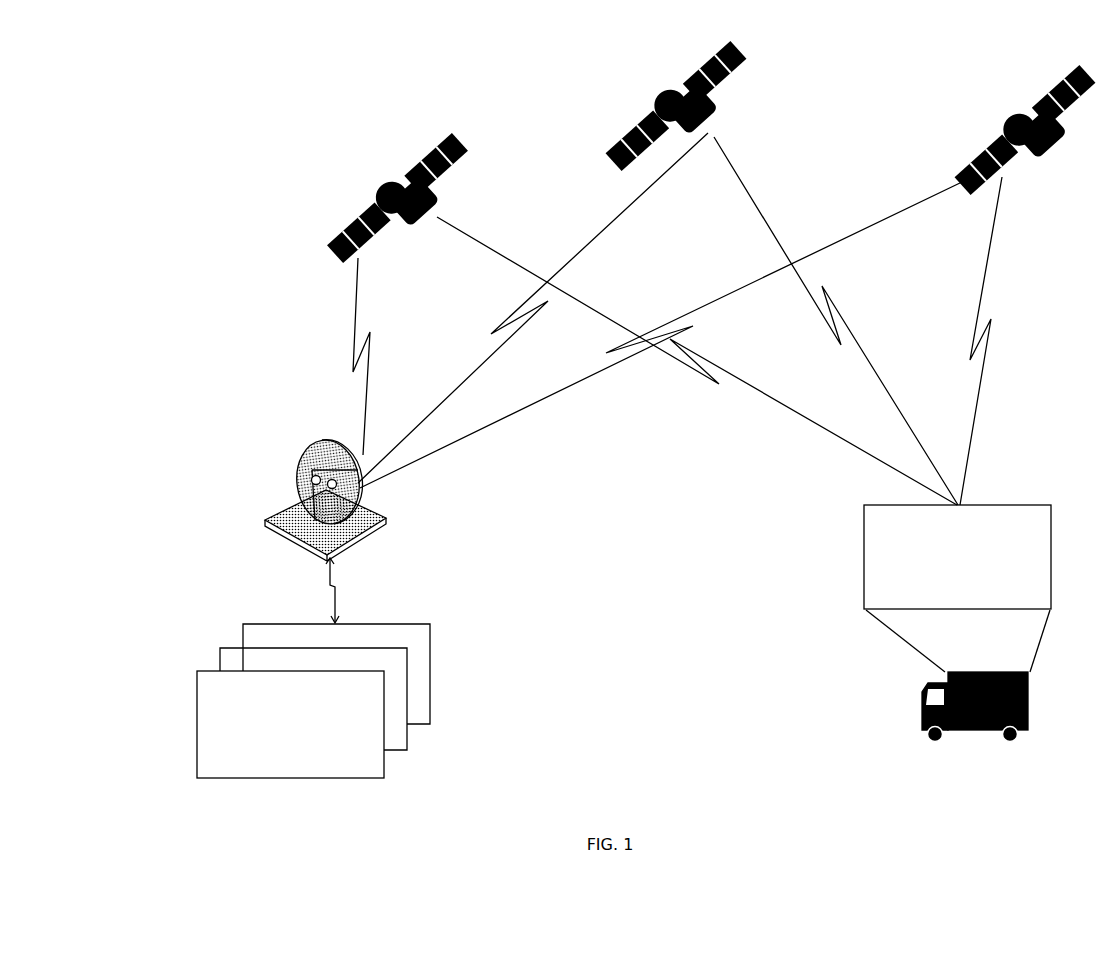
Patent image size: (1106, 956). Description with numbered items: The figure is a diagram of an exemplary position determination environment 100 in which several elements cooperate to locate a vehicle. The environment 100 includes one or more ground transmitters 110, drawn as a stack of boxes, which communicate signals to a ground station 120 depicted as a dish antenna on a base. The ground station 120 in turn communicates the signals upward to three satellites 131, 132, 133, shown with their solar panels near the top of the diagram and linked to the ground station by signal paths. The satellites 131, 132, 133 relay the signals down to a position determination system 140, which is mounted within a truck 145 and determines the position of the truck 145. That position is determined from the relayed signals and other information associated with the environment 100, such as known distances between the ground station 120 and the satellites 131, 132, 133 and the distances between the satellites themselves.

The position determination environment 100 is at (970, 35).
The ground transmitters 110 is at (276, 758).
The ground station 120 is at (265, 518).
The satellite 131 is at (352, 218).
The satellite 132 is at (630, 128).
The satellite 133 is at (977, 152).
The position determination system 140 is at (943, 603).
The truck 145 is at (1011, 743).